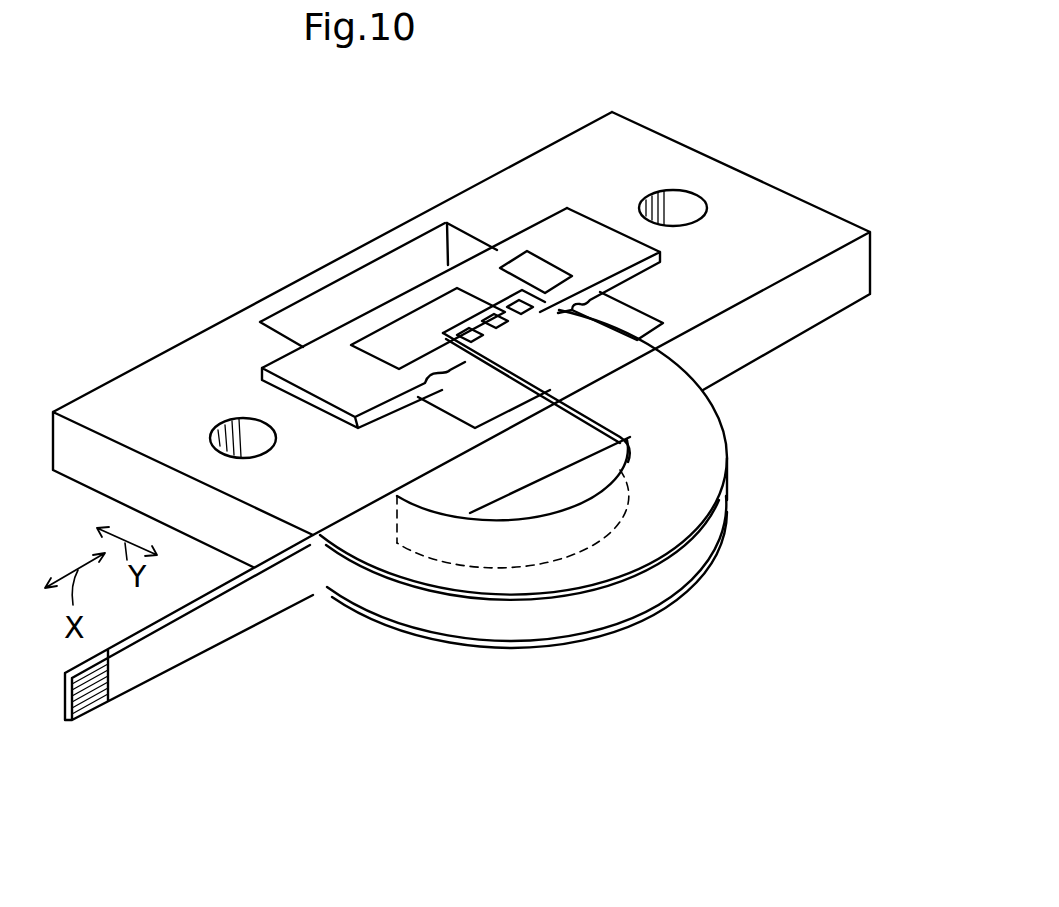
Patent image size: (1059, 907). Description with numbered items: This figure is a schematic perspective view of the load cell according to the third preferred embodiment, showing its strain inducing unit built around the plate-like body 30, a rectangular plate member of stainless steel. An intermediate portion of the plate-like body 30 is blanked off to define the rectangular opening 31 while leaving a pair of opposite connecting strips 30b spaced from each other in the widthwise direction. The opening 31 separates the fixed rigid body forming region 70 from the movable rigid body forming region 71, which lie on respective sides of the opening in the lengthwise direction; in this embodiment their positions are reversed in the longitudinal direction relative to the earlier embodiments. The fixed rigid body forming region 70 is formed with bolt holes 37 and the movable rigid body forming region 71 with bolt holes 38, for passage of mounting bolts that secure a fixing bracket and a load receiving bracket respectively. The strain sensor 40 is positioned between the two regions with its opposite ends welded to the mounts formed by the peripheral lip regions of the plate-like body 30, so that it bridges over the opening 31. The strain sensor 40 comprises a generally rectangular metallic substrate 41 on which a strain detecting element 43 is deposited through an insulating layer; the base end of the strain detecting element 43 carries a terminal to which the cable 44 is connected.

The fixed rigid body forming region 70 is at (200, 360).
The movable rigid body forming region 71 is at (618, 133).
The plate-like body 30 is at (752, 175).
The connecting strips 30b is at (293, 292).
The rectangular opening 31 is at (337, 290).
The bolt hole 37 is at (214, 430).
The bolt hole 38 is at (680, 202).
The strain sensor 40 is at (517, 227).
The substrate 41 is at (422, 292).
The strain detecting element 43 is at (477, 292).
The cable 44 is at (697, 432).